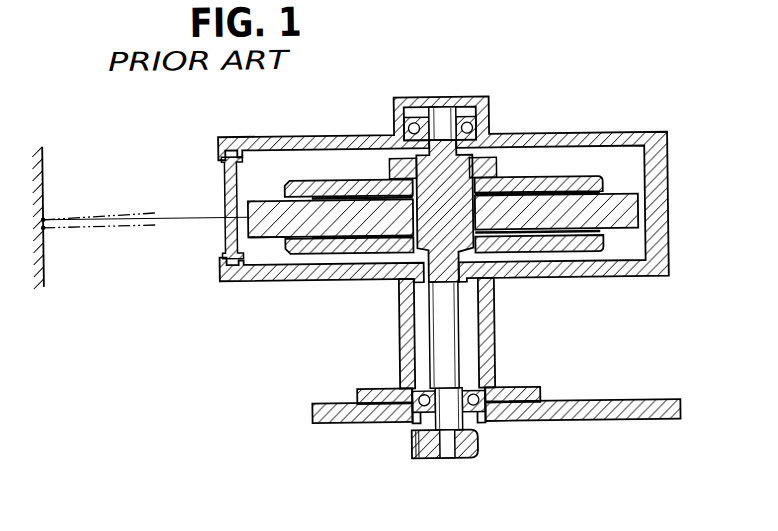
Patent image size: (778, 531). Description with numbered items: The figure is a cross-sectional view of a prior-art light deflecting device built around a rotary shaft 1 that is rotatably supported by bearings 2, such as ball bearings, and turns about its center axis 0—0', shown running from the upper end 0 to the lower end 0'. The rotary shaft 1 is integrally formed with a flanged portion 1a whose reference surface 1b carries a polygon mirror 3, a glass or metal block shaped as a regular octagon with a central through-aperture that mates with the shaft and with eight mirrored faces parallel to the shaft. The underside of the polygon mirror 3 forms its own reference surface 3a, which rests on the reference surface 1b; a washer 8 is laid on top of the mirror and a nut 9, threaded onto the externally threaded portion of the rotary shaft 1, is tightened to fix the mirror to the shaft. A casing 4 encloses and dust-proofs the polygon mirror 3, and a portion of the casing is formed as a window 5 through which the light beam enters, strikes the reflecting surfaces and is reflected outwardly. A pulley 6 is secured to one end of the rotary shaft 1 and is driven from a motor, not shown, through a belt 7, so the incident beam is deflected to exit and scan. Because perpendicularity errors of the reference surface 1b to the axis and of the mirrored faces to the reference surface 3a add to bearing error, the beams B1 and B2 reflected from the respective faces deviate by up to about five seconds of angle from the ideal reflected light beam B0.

The center axis 0 is at (443, 69).
The center axis 0' is at (452, 488).
The rotary shaft 1 is at (399, 268).
The flanged portion 1a is at (543, 248).
The reference surface 1b is at (600, 228).
The bearings 2 is at (485, 120).
The polygon mirror 3 is at (257, 207).
The reference surface 3a is at (262, 236).
The casing 4 is at (297, 281).
The window 5 is at (226, 234).
The pulley 6 is at (427, 461).
The belt 7 is at (512, 444).
The washer 8 is at (296, 186).
The nut 9 is at (492, 166).
The ideal reflected light beam B0 is at (43, 215).
The light beam B1 is at (43, 215).
The light beam B2 is at (43, 223).